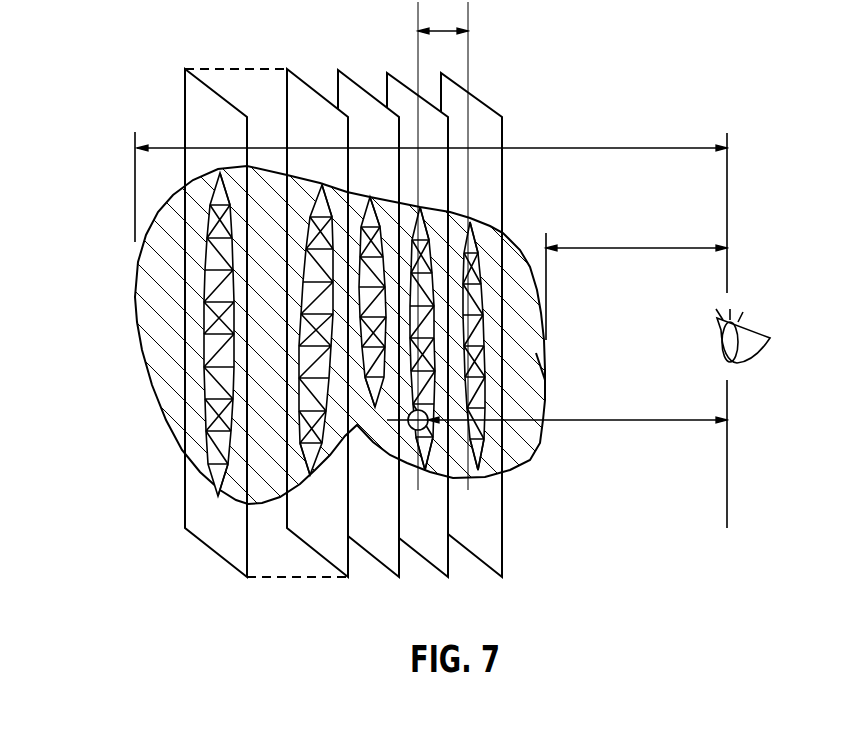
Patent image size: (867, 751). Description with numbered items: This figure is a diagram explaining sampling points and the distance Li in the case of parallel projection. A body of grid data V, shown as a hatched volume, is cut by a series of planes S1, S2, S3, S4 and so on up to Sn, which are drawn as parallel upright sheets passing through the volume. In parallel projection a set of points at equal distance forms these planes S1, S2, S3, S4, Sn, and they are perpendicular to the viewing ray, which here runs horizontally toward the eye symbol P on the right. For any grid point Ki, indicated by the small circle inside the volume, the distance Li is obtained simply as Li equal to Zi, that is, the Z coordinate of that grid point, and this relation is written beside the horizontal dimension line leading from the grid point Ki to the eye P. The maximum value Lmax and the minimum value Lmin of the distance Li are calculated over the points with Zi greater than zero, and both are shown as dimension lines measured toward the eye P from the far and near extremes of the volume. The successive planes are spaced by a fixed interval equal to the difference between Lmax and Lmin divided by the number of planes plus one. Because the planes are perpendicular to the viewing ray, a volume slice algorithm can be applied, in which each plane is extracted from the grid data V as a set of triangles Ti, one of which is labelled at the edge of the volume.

The grid data v is at (167, 377).
The plane Sn is at (266, 323).
The plane S4 is at (317, 323).
The plane S3 is at (368, 323).
The plane S2 is at (417, 325).
The plane S1 is at (471, 325).
The grid point Ki is at (409, 426).
The triangle Ti is at (535, 353).
The observer eye / viewpoint P is at (745, 354).
The maximum value of distance Lmax is at (432, 128).
The minimum value of distance Lmin is at (636, 226).
The distance Li is at (557, 400).
The Z coordinate of grid point Zi is at (557, 400).